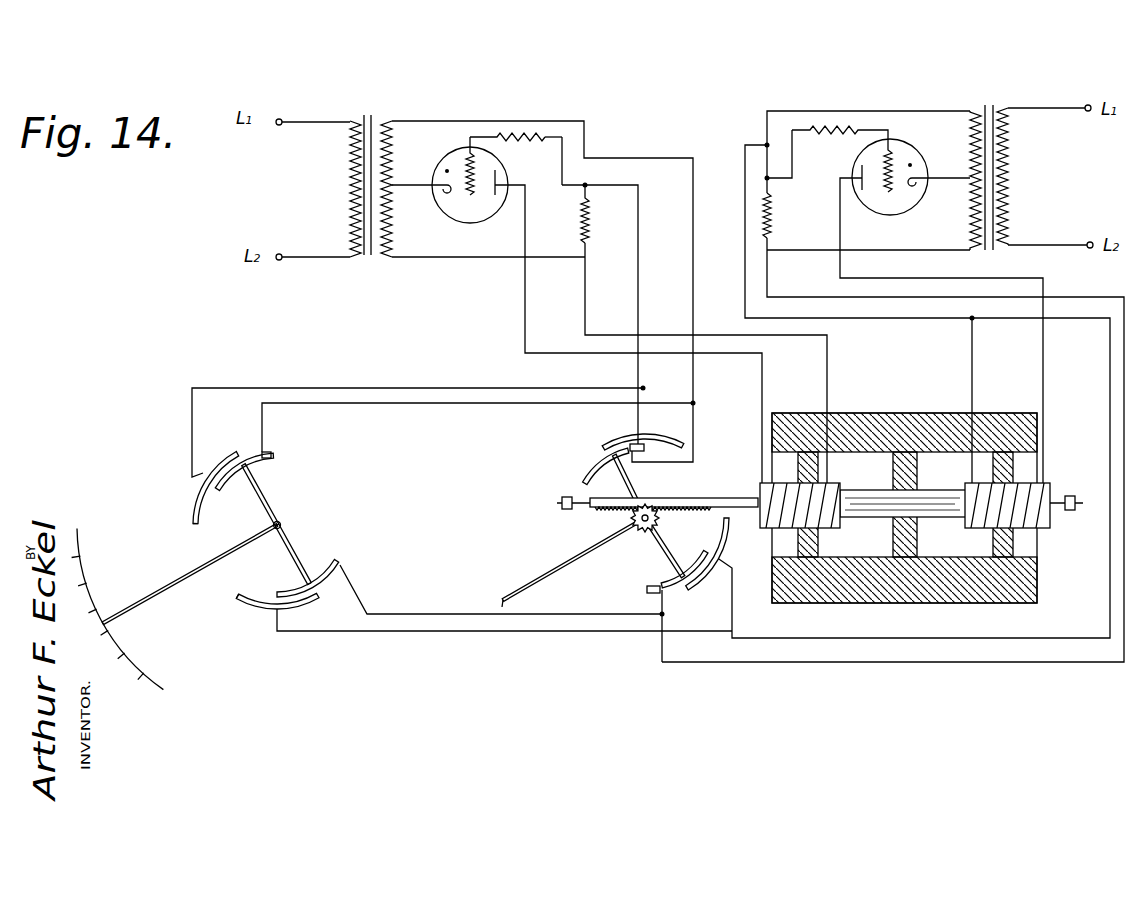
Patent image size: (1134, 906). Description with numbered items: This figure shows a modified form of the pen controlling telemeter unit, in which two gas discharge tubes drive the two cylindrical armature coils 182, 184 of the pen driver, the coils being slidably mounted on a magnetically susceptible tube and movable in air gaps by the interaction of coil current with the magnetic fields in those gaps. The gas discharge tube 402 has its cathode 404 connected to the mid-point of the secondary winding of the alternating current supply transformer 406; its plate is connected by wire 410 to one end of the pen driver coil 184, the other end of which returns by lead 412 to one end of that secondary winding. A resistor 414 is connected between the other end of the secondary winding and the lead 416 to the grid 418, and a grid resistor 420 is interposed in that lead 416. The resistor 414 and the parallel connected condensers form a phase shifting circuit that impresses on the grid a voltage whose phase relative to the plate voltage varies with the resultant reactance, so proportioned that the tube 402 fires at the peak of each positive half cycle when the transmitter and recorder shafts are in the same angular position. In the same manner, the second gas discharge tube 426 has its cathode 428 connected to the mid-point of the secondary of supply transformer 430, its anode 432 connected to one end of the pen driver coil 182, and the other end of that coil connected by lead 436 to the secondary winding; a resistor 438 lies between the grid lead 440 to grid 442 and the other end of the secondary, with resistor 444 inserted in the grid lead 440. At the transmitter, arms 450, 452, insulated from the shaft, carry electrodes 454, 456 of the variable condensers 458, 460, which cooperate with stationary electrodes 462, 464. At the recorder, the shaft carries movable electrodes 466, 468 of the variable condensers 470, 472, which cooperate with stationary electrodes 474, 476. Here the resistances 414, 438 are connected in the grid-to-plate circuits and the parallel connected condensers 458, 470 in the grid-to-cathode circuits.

The alternating current supply transformer 406 is at (366, 111).
The grid resistor 420 is at (522, 131).
The grid 418 is at (466, 162).
The grid lead 416 is at (562, 166).
The cathode 404 is at (424, 186).
The gas discharge tube 402 is at (462, 222).
The resistor 414 is at (583, 222).
The lead 412 is at (585, 300).
The wire 410 is at (525, 340).
The resistor 444 is at (840, 128).
The grid 442 is at (893, 160).
The grid lead 440 is at (793, 172).
The resistor 438 is at (768, 223).
The anode 432 is at (877, 205).
The second gas discharge tube 426 is at (876, 204).
The cathode 428 is at (923, 195).
The lead 436 is at (943, 277).
The supply transformer 430 is at (995, 100).
The variable condenser 458 is at (203, 467).
The stationary electrode 462 is at (192, 506).
The electrode 454 is at (270, 452).
The arm 450 is at (257, 478).
The arm 452 is at (302, 550).
The electrode 456 is at (340, 568).
The variable condenser 460 is at (313, 612).
The stationary electrode 464 is at (242, 602).
The variable condenser 470 is at (664, 436).
The stationary electrode 474 is at (626, 437).
The movable electrode 466 is at (583, 473).
The stationary electrode 476 is at (726, 544).
The movable electrode 468 is at (697, 553).
The variable condenser 472 is at (700, 572).
The armature coil 184 is at (787, 532).
The armature coil 182 is at (1090, 556).